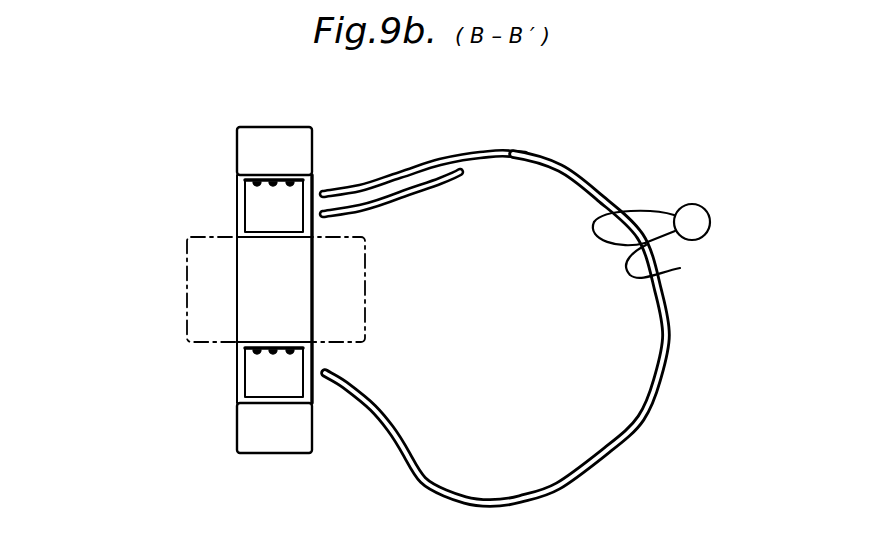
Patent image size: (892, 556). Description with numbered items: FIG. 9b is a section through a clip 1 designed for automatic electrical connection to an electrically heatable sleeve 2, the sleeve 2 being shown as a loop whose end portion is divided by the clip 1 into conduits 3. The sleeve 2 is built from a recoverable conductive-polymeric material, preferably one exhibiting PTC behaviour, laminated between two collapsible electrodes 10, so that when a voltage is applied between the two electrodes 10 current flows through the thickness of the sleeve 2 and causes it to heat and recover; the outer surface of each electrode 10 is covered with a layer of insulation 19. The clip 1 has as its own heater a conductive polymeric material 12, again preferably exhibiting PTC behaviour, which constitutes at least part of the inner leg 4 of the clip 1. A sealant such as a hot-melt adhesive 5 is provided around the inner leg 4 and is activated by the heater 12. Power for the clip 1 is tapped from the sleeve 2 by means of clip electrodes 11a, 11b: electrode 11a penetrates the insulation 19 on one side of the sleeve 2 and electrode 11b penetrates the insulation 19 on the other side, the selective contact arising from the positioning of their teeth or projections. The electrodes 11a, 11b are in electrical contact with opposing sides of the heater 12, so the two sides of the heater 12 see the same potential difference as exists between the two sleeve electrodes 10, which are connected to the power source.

The clip 1 is at (222, 140).
The clip electrode 11a is at (245, 187).
The clip electrode 11b is at (245, 352).
The conductive polymeric material 12 is at (305, 318).
The inner leg 4 is at (242, 272).
The hot-melt adhesive 5 is at (365, 272).
The insulation 19 is at (373, 181).
The sleeve 2 is at (614, 196).
The electrodes 10 is at (418, 160).
The conduits 3 is at (584, 333).